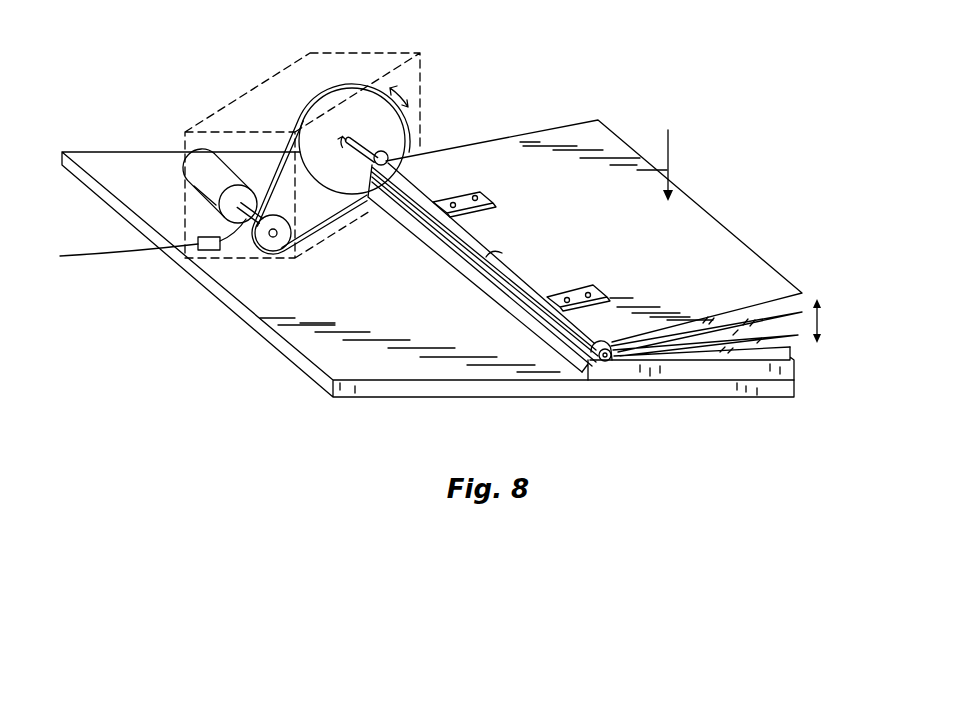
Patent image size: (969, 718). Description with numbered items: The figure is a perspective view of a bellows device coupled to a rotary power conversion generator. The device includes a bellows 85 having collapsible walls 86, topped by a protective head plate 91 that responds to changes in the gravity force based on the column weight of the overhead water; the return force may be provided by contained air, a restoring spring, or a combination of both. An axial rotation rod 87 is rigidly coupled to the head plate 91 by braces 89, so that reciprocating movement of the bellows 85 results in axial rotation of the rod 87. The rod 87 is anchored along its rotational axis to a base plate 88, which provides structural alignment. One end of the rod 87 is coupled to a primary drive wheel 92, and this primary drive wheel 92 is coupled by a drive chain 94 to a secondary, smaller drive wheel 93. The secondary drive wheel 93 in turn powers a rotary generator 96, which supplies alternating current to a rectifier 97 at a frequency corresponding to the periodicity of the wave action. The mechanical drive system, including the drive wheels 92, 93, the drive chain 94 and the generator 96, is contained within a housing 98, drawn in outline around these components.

The bellows 85 is at (701, 216).
The collapsible walls 86 is at (800, 342).
The axial rotation rod 87 is at (598, 346).
The base plate 88 is at (692, 390).
The braces 89 is at (603, 290).
The protective head plate 91 is at (757, 273).
The primary drive wheel 92 is at (364, 107).
The secondary drive wheel 93 is at (276, 252).
The drive chain 94 is at (280, 165).
The rotary generator 96 is at (202, 172).
The rectifier 97 is at (203, 251).
The housing 98 is at (421, 65).